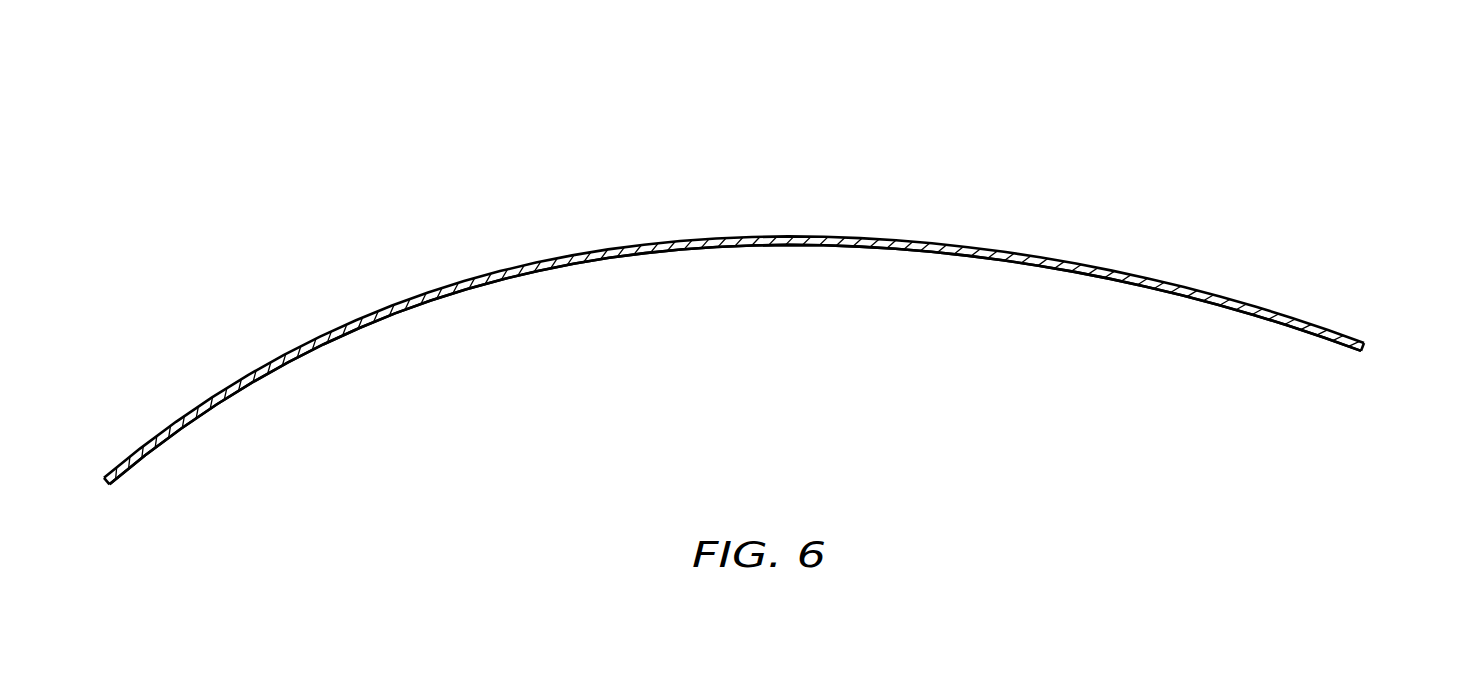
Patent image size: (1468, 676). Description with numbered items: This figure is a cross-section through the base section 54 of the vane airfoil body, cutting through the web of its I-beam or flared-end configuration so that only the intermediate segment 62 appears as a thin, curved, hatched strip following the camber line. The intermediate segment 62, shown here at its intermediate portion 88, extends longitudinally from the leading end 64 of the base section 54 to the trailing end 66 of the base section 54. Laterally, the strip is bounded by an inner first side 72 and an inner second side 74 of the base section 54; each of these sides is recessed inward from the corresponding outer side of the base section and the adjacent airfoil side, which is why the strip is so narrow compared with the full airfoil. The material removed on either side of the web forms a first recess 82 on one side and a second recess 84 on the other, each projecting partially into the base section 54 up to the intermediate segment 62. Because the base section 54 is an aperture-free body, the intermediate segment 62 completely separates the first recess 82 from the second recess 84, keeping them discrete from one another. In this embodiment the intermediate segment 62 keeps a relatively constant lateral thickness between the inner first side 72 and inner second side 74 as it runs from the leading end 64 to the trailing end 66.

The base section 54 is at (766, 310).
The intermediate segment 62 is at (766, 310).
The intermediate segment intermediate portion 88 is at (1029, 117).
The second recess 84 is at (632, 215).
The first recess 82 is at (630, 278).
The inner second side 74 is at (455, 284).
The inner first side 72 is at (448, 298).
The leading end 64 is at (105, 490).
The trailing end 66 is at (1368, 351).